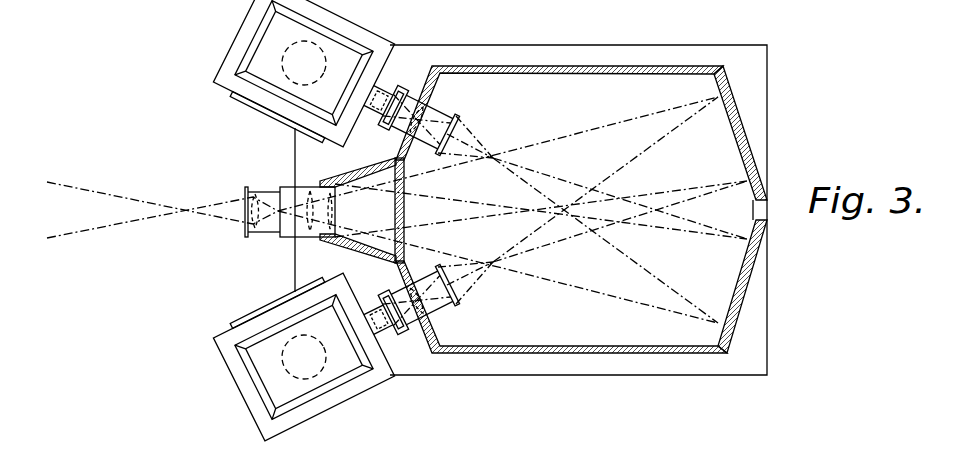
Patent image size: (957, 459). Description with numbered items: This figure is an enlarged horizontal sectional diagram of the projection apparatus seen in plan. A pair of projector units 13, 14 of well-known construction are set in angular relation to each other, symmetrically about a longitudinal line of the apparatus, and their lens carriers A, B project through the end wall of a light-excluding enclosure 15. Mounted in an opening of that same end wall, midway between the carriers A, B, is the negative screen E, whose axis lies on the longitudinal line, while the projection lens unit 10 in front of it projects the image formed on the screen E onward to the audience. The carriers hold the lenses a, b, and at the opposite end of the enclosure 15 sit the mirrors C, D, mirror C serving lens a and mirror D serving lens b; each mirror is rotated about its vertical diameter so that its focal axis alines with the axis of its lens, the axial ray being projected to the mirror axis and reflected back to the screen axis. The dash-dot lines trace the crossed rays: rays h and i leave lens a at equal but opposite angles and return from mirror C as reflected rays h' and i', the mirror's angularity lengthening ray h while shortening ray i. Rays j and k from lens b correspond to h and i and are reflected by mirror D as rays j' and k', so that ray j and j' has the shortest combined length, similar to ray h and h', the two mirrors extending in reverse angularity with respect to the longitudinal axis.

The projection lens unit 10 is at (284, 238).
The projector unit 13 is at (227, 54).
The projector unit 14 is at (247, 406).
The enclosure 15 is at (569, 354).
The lens carrier A is at (433, 117).
The lens carrier B is at (430, 303).
The lens a is at (450, 117).
The lens b is at (459, 296).
The negative screen E is at (407, 208).
The mirror C is at (734, 294).
The mirror D is at (735, 133).
The projected ray h is at (605, 240).
The reflected ray h' is at (498, 268).
The projected ray i is at (541, 211).
The reflected ray i' is at (620, 209).
The projected ray j is at (605, 179).
The reflected ray j' is at (498, 154).
The projected ray k is at (620, 224).
The reflected ray k' is at (541, 204).